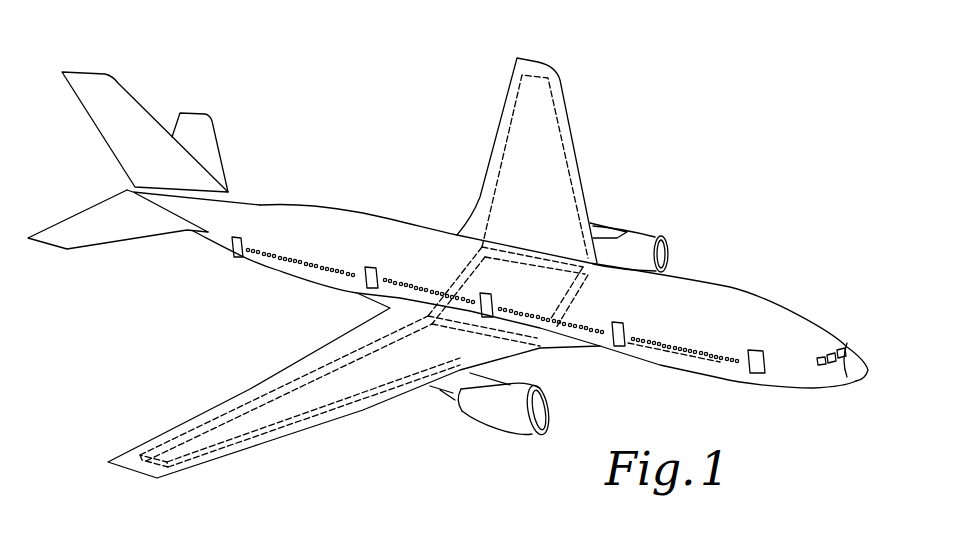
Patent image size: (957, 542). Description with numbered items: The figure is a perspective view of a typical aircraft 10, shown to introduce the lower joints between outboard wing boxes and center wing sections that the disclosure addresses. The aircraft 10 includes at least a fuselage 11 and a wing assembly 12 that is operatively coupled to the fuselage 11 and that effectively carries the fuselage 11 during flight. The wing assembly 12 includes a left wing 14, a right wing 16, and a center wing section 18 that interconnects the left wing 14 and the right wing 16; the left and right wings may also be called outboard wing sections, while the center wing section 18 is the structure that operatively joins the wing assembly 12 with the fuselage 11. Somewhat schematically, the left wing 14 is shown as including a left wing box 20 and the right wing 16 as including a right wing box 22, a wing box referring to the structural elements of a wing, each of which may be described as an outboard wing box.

The aircraft 10 is at (448, 262).
The fuselage 11 is at (363, 213).
The wing assembly 12 is at (632, 182).
The left wing 14 is at (563, 90).
The right wing 16 is at (215, 462).
The center wing section 18 is at (455, 277).
The left wing box 20 is at (558, 125).
The right wing box 22 is at (318, 412).